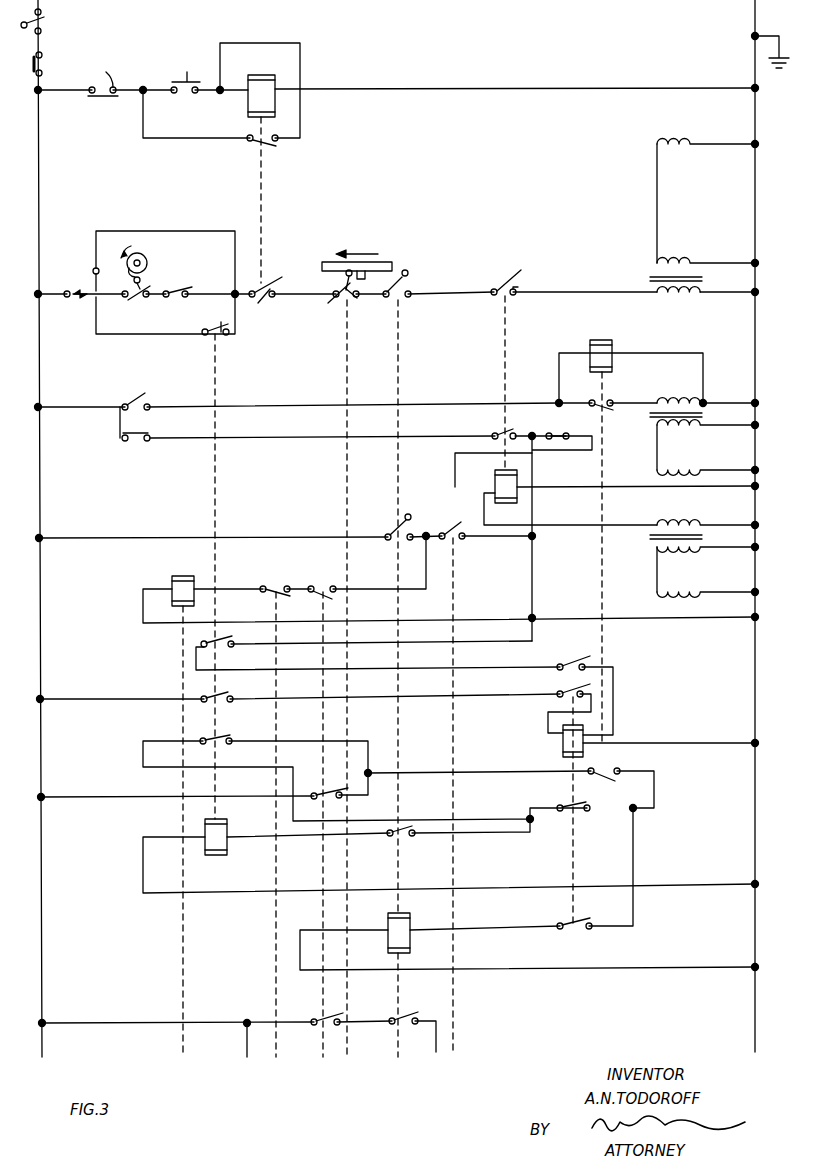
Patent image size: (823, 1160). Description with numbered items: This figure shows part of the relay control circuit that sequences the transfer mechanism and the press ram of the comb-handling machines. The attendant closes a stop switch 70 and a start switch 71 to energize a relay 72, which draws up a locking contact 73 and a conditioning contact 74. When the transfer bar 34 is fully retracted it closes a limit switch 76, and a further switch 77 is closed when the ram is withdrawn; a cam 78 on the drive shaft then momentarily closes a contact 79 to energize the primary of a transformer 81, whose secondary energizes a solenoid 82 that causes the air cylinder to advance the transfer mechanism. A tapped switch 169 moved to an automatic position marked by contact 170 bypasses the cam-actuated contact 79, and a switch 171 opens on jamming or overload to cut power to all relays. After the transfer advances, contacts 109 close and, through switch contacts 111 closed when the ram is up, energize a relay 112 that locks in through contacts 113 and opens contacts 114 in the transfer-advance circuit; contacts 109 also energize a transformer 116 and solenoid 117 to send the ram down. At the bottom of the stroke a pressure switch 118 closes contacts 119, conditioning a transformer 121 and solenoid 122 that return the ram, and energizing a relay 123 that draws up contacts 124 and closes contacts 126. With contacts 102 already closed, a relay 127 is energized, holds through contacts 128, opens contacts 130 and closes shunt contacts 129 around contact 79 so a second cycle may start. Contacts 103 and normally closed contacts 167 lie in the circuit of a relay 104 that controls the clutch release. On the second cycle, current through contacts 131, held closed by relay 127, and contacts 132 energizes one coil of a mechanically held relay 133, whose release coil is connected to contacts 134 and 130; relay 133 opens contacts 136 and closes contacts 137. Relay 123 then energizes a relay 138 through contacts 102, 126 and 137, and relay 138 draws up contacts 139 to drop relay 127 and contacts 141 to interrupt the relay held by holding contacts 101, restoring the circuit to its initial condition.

The switch 171 is at (40, 23).
The stop switch 70 is at (106, 72).
The start switch 71 is at (180, 80).
The relay 72 is at (265, 86).
The locking contact 73 is at (276, 146).
The solenoid 82 is at (676, 146).
The transformer 81 is at (650, 283).
The transfer bar 34 is at (385, 262).
The limit switch 76 is at (330, 303).
The switch 77 is at (408, 276).
The contacts 114 is at (521, 270).
The contact 170 is at (93, 268).
The cam 78 is at (147, 262).
The contact 79 is at (140, 297).
The conditioning contact 74 is at (274, 283).
The tapped switch 169 is at (85, 302).
The shunt contacts 129 is at (216, 335).
The contacts 119 is at (145, 393).
The pressure switch 118 is at (137, 440).
The relay 123 is at (606, 350).
The transformer 121 is at (672, 398).
The contacts 113 is at (510, 430).
The contacts 124 is at (598, 405).
The relay 112 is at (510, 487).
The solenoid 122 is at (678, 474).
The contacts 109 is at (458, 524).
The switch contacts 111 is at (398, 530).
The transformer 116 is at (662, 538).
The solenoid 117 is at (662, 598).
The relay 104 is at (183, 576).
The normally closed contacts 167 is at (270, 588).
The contacts 103 is at (325, 596).
The contacts 131 is at (208, 640).
The contacts 130 is at (212, 694).
The contacts 132 is at (590, 656).
The contacts 134 is at (590, 684).
The mechanically held relay 133 is at (560, 743).
The contacts 128 is at (215, 738).
The contacts 102 is at (330, 798).
The contacts 126 is at (615, 781).
The relay 127 is at (220, 843).
The contacts 139 is at (400, 836).
The contacts 136 is at (576, 812).
The relay 138 is at (410, 940).
The contacts 137 is at (575, 930).
The holding contacts 101 is at (330, 1014).
The contacts 141 is at (405, 1025).